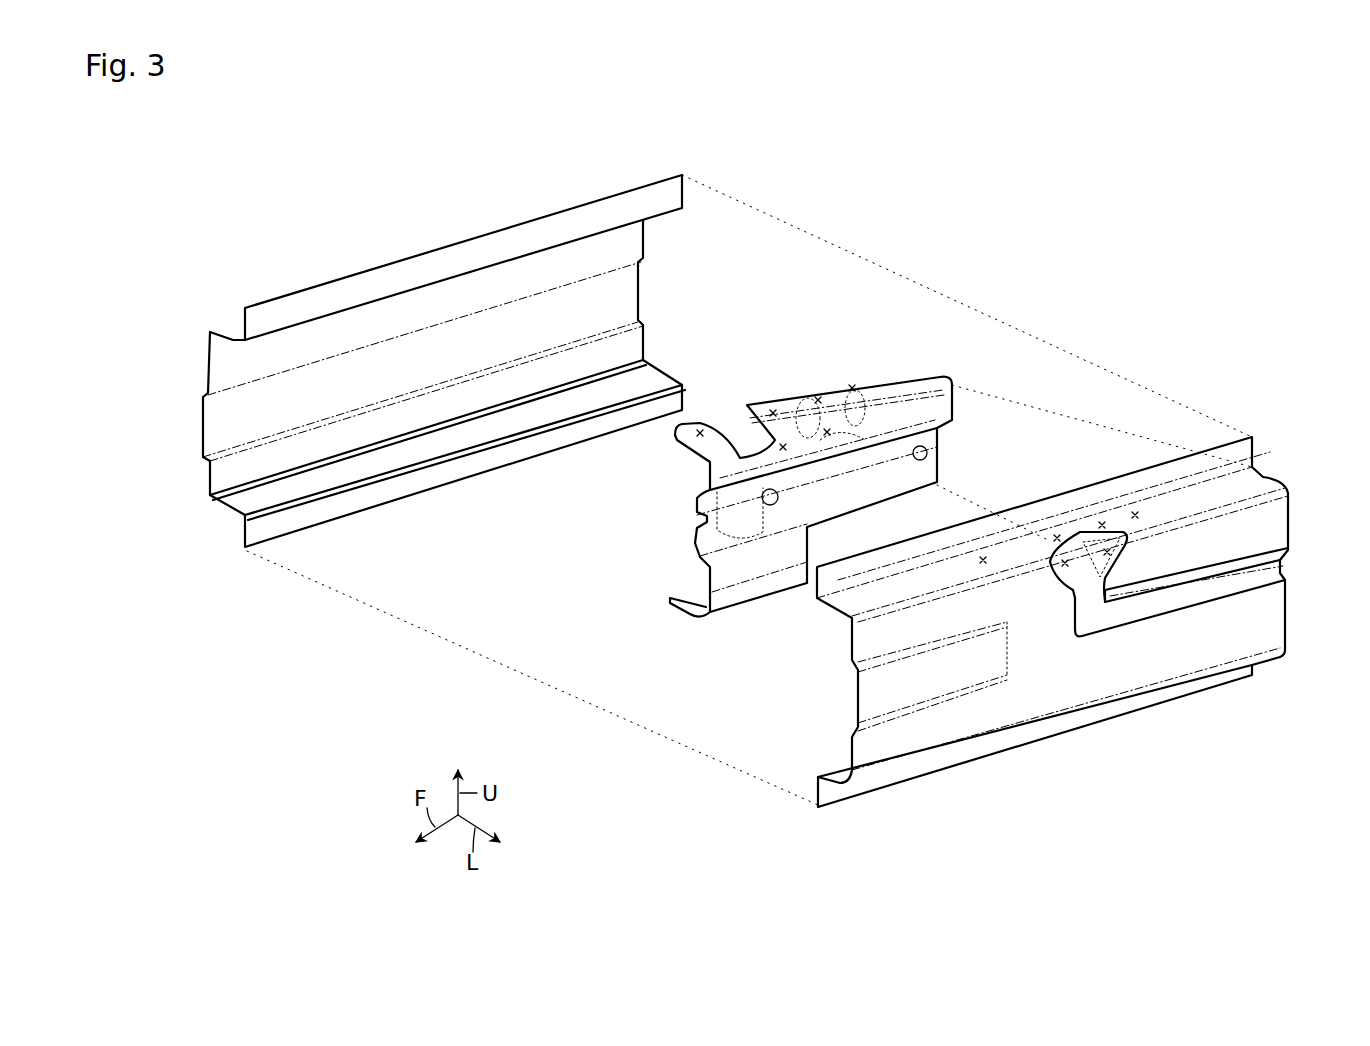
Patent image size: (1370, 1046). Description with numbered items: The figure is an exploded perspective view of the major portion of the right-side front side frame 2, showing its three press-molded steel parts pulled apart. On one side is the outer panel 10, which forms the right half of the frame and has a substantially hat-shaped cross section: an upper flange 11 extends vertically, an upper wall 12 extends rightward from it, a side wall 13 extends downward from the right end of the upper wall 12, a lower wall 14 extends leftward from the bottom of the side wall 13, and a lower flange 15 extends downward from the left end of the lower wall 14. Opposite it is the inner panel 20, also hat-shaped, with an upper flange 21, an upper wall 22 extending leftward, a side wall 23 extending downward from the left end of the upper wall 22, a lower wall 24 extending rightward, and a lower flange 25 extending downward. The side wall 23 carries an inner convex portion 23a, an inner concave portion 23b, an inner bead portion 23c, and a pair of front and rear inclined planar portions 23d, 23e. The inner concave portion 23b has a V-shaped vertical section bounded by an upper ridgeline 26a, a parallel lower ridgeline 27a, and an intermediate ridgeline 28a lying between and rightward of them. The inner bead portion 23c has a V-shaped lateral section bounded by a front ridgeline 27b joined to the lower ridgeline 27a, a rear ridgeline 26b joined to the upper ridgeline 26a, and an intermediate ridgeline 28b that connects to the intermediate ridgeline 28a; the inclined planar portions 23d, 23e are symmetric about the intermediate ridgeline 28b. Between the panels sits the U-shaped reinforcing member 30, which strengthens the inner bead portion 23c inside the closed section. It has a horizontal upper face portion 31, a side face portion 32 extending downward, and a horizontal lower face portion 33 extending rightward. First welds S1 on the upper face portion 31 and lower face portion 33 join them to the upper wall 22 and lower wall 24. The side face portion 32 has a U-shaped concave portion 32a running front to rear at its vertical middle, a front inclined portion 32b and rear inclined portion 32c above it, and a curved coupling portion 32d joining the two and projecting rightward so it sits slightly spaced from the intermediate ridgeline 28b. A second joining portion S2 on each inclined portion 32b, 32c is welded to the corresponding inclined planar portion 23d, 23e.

The front side frame 2 is at (342, 195).
The outer panel 10 is at (412, 348).
The upper flange 11 is at (473, 238).
The upper wall 12 is at (233, 327).
The side wall 13 is at (205, 370).
The lower wall 14 is at (228, 503).
The lower flange 15 is at (240, 543).
The inner panel 20 is at (1069, 599).
The upper flange 21 is at (1158, 477).
The upper wall 22 is at (1262, 477).
The side wall 23 is at (1273, 637).
The inner convex portion 23a is at (948, 692).
The inner concave portion 23b is at (1202, 608).
The inner bead portion 23c is at (1070, 610).
The front inclined planar portion 23d is at (1077, 552).
The rear inclined planar portion 23e is at (1093, 545).
The lower wall 24 is at (833, 777).
The lower flange 25 is at (875, 790).
The upper ridgeline 26a is at (1253, 550).
The rear ridgeline 26b is at (1107, 596).
The lower ridgeline 27a is at (1253, 590).
The front ridgeline 27b is at (1073, 593).
The intermediate ridgeline 28a is at (1280, 560).
The intermediate ridgeline 28b is at (1107, 590).
The reinforcing member 30 is at (910, 475).
The upper face portion 31 is at (778, 393).
The side face portion 32 is at (708, 473).
The concave portion 32a is at (925, 440).
The front inclined portion 32b is at (737, 447).
The rear inclined portion 32c is at (860, 400).
The coupling portion 32d is at (797, 413).
The lower face portion 33 is at (680, 603).
The first welds S1 is at (818, 400).
The second joining portion S2 is at (827, 432).